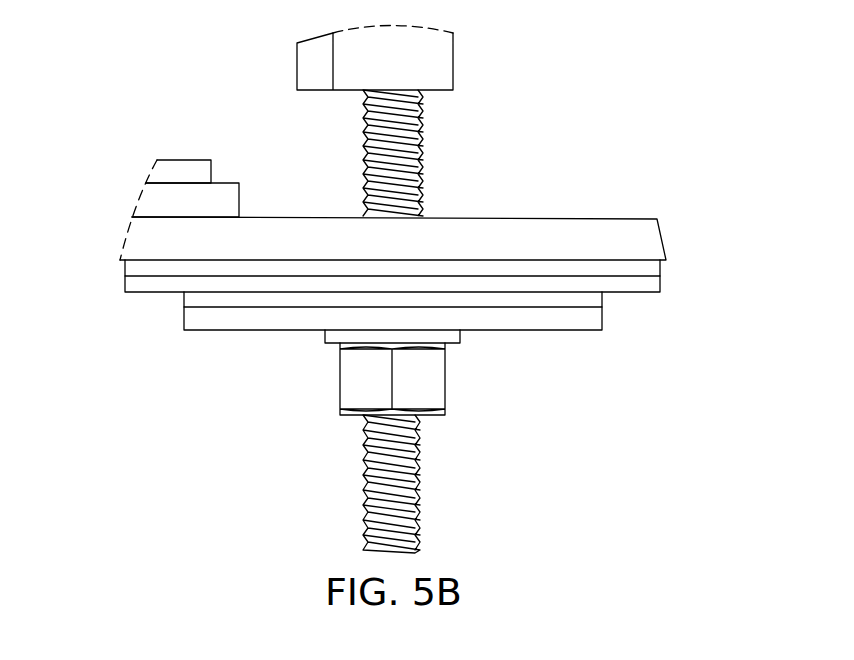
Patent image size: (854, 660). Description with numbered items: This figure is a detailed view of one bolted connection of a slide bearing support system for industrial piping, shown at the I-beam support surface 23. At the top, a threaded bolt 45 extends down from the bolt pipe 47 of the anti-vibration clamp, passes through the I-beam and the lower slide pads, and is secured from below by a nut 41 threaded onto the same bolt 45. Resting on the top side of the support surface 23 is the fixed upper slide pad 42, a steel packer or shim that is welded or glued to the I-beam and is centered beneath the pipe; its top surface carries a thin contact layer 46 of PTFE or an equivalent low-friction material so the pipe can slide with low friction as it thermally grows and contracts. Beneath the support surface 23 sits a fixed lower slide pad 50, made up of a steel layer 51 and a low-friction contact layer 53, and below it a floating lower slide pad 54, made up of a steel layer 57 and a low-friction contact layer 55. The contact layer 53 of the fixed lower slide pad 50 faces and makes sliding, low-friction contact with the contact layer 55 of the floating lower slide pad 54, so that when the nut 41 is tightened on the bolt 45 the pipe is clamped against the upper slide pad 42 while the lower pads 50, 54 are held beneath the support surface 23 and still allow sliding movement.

The bolt pipe 47 is at (453, 60).
The threaded bolt 45 is at (423, 150).
The contact layer 46 is at (211, 168).
The fixed upper slide pad 42 is at (239, 205).
The support surface 23 is at (610, 228).
The fixed lower slide pad 50 is at (364, 285).
The steel layer 51 is at (660, 270).
The low-friction contact layer 53 is at (625, 295).
The floating lower slide pad 54 is at (353, 339).
The low-friction contact layer 55 is at (605, 296).
The steel layer 57 is at (527, 332).
The nut 41 is at (445, 385).